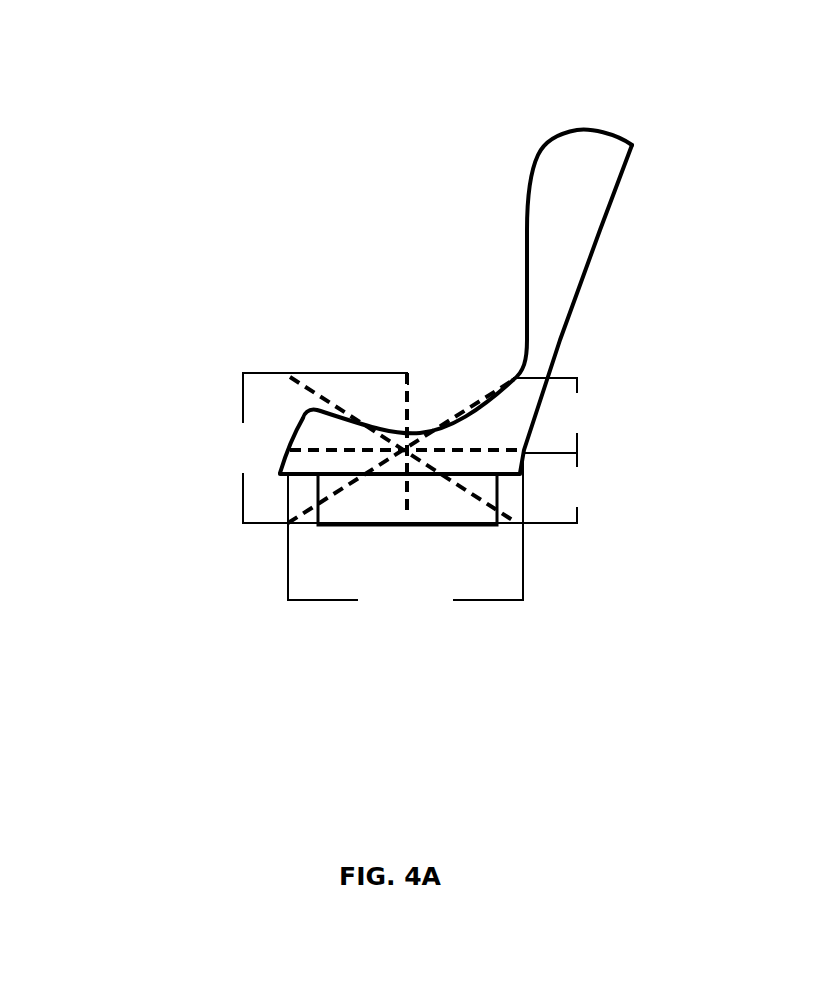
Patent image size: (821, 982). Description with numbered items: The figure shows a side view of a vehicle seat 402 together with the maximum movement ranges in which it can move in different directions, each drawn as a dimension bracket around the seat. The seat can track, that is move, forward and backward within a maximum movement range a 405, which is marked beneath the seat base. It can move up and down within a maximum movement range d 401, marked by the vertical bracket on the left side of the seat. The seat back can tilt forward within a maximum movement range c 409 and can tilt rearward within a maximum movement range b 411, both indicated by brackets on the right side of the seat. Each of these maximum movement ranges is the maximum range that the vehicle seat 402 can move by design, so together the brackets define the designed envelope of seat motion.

The maximum movement range d 401 is at (227, 452).
The vehicle seat 402 is at (630, 135).
The maximum movement range a 405 is at (397, 623).
The maximum movement range c 409 is at (583, 412).
The maximum movement range b 411 is at (583, 494).